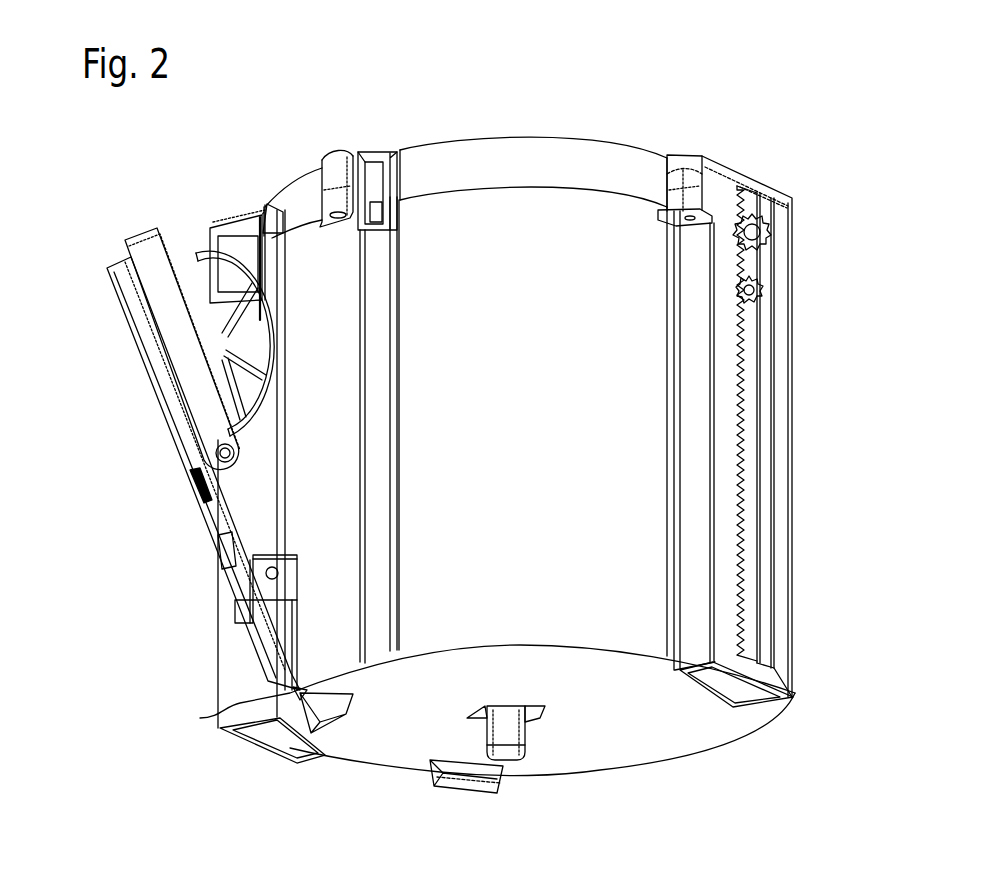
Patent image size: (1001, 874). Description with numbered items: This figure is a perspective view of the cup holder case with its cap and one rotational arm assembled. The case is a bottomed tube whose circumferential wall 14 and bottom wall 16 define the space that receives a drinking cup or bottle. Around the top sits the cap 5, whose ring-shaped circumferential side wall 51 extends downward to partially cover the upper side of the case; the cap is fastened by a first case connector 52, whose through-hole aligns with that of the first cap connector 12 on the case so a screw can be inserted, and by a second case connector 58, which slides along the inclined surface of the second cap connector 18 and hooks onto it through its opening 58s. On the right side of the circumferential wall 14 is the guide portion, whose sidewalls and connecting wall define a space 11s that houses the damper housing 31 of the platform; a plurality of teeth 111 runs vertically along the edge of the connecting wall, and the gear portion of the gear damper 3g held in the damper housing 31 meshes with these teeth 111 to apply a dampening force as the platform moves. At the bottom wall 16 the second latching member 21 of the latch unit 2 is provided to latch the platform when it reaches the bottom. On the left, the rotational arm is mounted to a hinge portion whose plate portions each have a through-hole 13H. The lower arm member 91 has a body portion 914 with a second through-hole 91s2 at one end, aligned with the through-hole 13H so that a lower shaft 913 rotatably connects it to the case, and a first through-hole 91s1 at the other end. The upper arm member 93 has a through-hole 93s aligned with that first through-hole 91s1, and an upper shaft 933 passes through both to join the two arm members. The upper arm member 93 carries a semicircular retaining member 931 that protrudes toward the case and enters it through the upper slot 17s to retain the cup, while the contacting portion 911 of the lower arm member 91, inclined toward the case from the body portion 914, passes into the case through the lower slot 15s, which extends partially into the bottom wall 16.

The latch unit 2 is at (507, 732).
The gear damper 3g is at (750, 242).
The cap 5 is at (573, 178).
The space 11s is at (753, 432).
The first cap connector 12 is at (332, 193).
The through-hole 13H is at (175, 589).
The circumferential wall 14 is at (528, 434).
The lower slot 15s is at (305, 696).
The bottom wall 16 is at (609, 715).
The upper slot 17s is at (261, 232).
The second cap connector 18 is at (310, 204).
The second latching member 21 is at (557, 768).
The damper housing 31 is at (755, 298).
The circumferential side wall 51 is at (465, 187).
The first case connector 52 is at (332, 156).
The second case connector 58 is at (310, 204).
The opening 58s is at (210, 232).
The lower arm member 91 is at (202, 473).
The first through-hole 91s1 is at (202, 492).
The second through-hole 91s2 is at (268, 574).
The upper arm member 93 is at (177, 333).
The through-hole 93s is at (119, 493).
The teeth 111 is at (740, 380).
The contacting portion 911 is at (298, 759).
The lower shaft 913 is at (175, 589).
The body portion 914 is at (238, 515).
The retaining member 931 is at (245, 272).
The upper shaft 933 is at (119, 493).